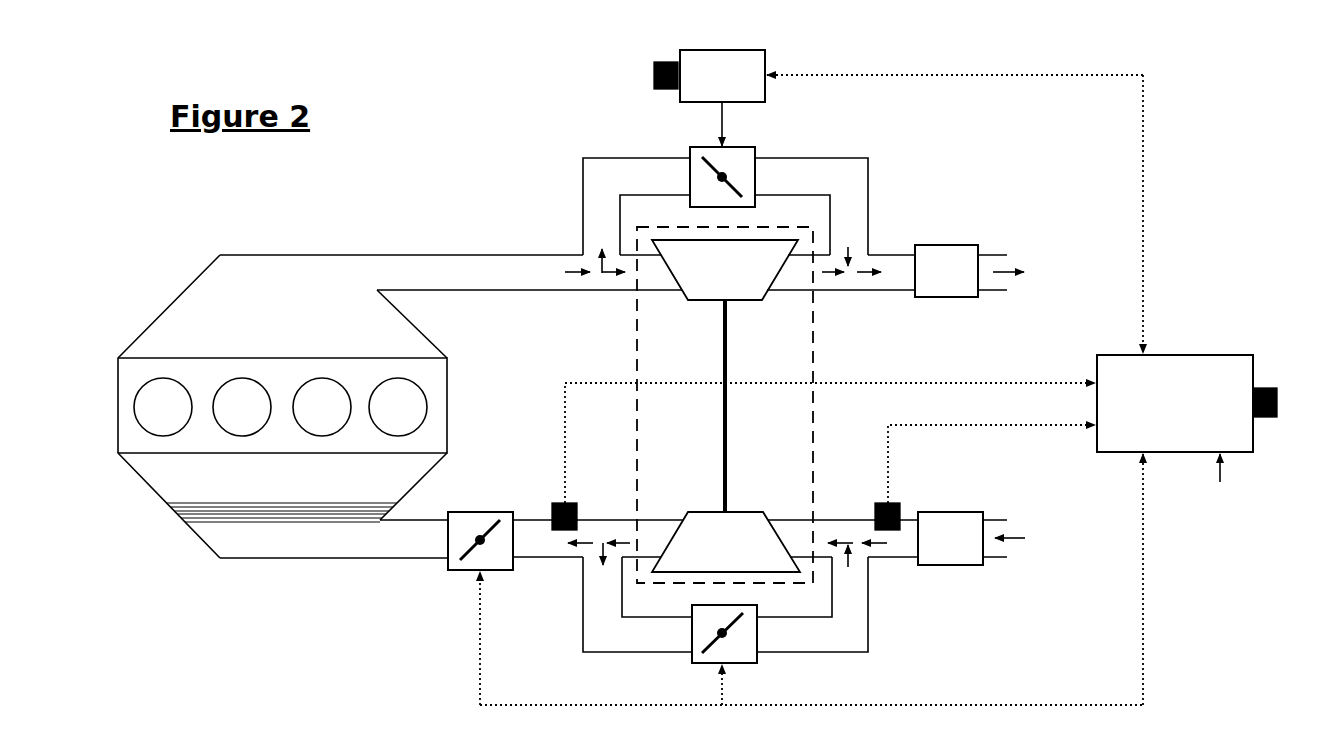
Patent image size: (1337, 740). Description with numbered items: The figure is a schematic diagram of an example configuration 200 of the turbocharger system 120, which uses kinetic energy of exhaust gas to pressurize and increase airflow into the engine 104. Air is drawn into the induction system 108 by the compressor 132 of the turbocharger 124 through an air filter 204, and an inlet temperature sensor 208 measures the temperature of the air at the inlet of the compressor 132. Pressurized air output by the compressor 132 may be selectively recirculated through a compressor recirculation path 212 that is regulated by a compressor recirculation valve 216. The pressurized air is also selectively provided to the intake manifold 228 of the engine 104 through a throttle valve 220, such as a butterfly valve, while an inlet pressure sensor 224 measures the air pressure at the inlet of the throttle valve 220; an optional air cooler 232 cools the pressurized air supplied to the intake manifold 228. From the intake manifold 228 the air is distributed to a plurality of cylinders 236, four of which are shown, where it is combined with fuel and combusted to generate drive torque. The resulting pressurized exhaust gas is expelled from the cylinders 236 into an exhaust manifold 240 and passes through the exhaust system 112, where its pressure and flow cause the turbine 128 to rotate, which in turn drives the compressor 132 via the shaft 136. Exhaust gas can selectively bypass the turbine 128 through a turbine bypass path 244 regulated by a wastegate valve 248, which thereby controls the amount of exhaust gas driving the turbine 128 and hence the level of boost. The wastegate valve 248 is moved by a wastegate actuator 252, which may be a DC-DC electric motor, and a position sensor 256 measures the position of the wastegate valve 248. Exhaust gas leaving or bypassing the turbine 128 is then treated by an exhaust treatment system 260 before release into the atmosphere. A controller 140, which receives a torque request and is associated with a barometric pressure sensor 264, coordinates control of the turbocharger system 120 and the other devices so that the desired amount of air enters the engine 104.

The configuration 200 is at (398, 41).
The engine 104 is at (117, 432).
The induction system 108 is at (920, 649).
The exhaust system 112 is at (910, 147).
The turbocharger system 120 is at (526, 176).
The turbocharger 124 is at (637, 362).
The turbine 128 is at (703, 300).
The compressor 132 is at (707, 512).
The shaft 136 is at (727, 452).
The controller 140 is at (1207, 355).
The air filter 204 is at (950, 512).
The inlet temperature sensor 208 is at (878, 503).
The compressor recirculation path 212 is at (792, 652).
The compressor recirculation valve 216 is at (693, 663).
The throttle valve 220 is at (487, 512).
The inlet pressure sensor 224 is at (555, 503).
The intake manifold 228 is at (135, 475).
The air cooler 232 is at (182, 515).
The cylinders 236 is at (137, 397).
The exhaust manifold 240 is at (146, 330).
The turbine bypass path 244 is at (637, 158).
The wastegate valve 248 is at (758, 147).
The wastegate actuator 252 is at (723, 50).
The position sensor 256 is at (667, 62).
The exhaust treatment system 260 is at (948, 245).
The barometric pressure sensor 264 is at (1278, 400).